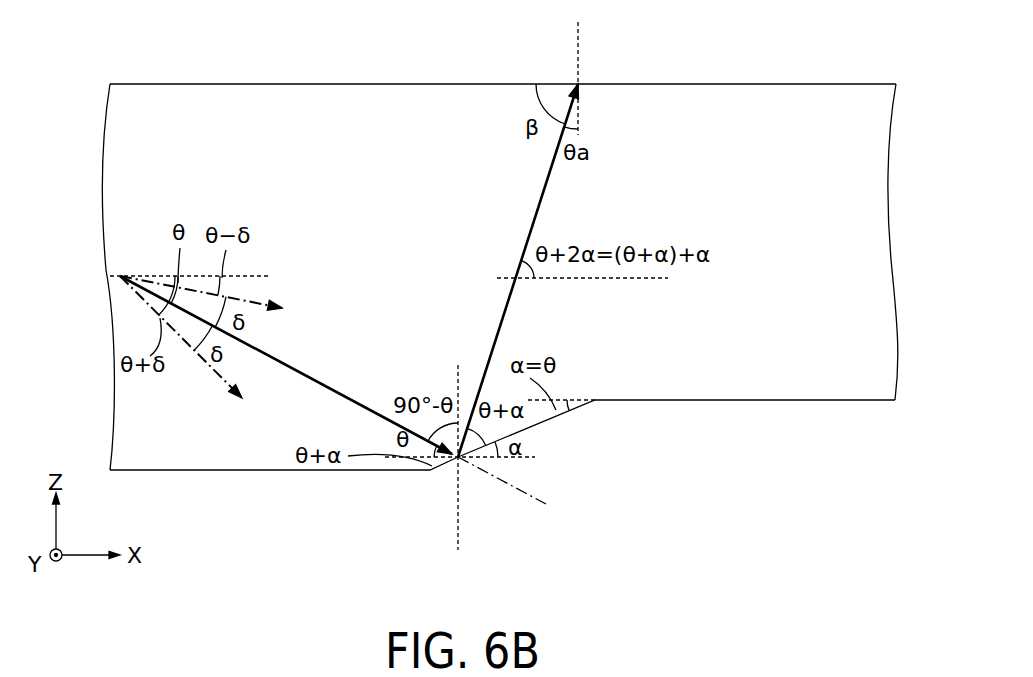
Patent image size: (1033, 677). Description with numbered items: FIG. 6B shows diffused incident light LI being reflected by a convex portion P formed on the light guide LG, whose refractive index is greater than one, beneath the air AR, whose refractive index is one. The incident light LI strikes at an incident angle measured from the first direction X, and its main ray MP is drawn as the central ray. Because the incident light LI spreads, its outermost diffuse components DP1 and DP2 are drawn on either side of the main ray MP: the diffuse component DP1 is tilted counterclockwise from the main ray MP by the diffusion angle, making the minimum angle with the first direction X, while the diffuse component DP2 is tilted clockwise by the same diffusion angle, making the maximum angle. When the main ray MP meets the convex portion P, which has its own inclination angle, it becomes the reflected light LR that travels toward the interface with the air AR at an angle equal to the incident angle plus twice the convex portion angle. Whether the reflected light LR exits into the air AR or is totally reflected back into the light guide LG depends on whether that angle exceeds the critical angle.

The air AR is at (128, 50).
The light guide LG is at (128, 162).
The incident light LI is at (352, 268).
The diffuse component DP1 is at (255, 300).
The diffuse component DP2 is at (183, 355).
The main ray MP is at (325, 378).
The reflected light LR is at (503, 308).
The convex portion P is at (592, 487).